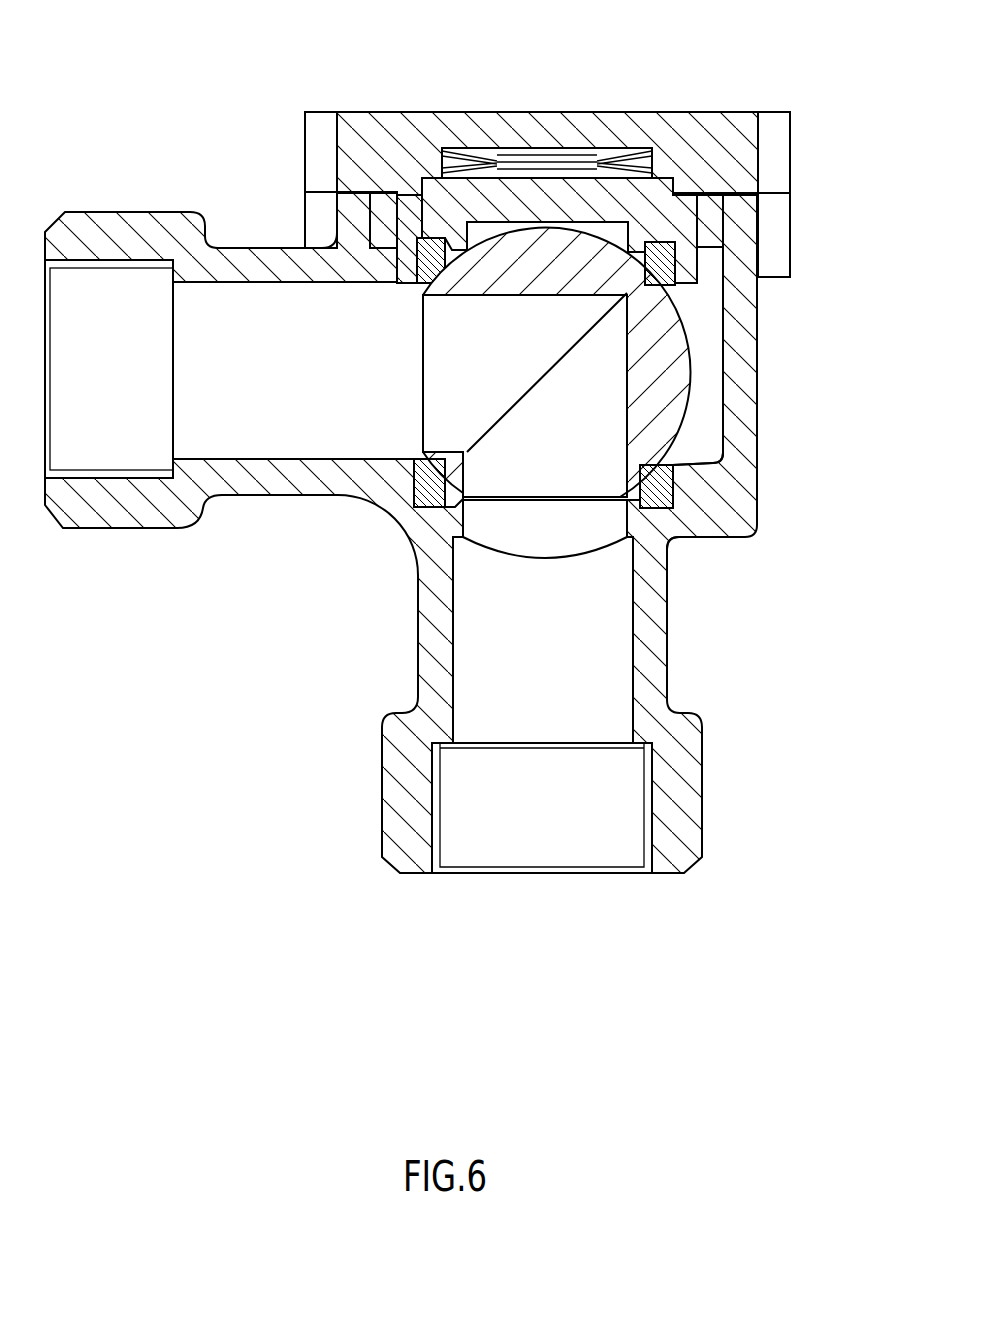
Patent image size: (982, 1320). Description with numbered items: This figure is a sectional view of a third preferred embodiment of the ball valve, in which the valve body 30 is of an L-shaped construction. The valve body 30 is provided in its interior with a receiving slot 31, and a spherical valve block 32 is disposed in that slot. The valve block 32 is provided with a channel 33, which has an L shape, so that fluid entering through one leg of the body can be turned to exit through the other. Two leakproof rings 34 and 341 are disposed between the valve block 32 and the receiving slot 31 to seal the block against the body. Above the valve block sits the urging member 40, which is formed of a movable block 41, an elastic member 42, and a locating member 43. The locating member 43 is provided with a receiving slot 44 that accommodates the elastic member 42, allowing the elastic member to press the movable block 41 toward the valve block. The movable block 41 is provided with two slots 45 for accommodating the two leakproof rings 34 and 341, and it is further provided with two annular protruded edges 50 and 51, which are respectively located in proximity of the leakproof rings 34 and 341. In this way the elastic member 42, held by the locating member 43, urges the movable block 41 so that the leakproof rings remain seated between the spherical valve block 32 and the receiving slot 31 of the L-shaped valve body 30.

The valve body 30 is at (313, 500).
The receiving slot 31 is at (708, 323).
The valve block 32 is at (700, 372).
The channel 33 is at (470, 362).
The leakproof ring 34 is at (758, 287).
The leakproof ring 341 is at (660, 487).
The urging member 40 is at (547, 165).
The movable block 41 is at (577, 188).
The elastic member 42 is at (483, 173).
The locating member 43 is at (437, 110).
The receiving slot 44 is at (400, 215).
The slot 45 is at (425, 290).
The annular protruded edge 50 is at (630, 238).
The annular protruded edge 51 is at (680, 542).